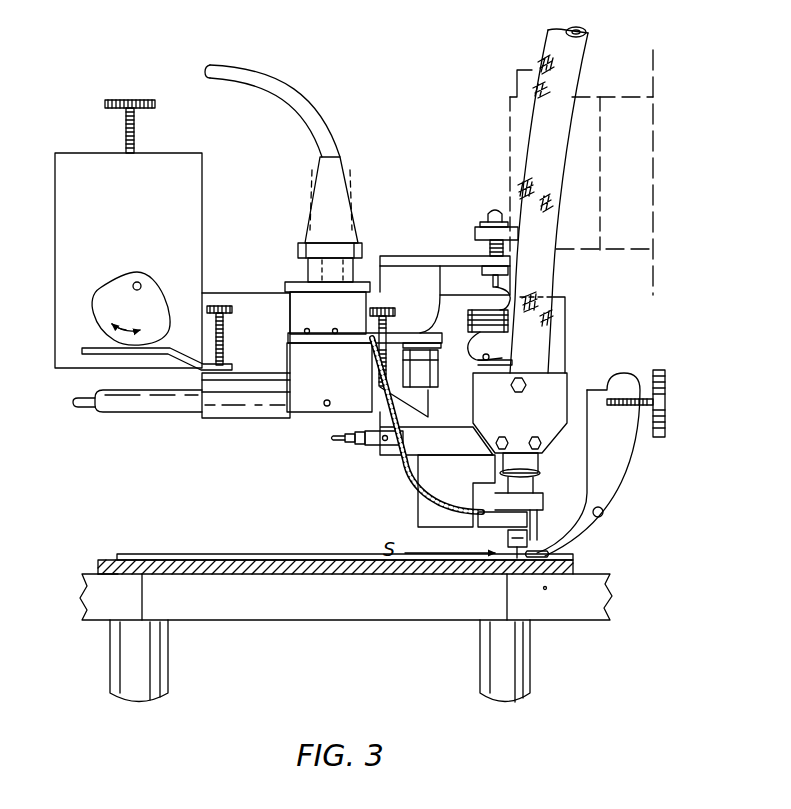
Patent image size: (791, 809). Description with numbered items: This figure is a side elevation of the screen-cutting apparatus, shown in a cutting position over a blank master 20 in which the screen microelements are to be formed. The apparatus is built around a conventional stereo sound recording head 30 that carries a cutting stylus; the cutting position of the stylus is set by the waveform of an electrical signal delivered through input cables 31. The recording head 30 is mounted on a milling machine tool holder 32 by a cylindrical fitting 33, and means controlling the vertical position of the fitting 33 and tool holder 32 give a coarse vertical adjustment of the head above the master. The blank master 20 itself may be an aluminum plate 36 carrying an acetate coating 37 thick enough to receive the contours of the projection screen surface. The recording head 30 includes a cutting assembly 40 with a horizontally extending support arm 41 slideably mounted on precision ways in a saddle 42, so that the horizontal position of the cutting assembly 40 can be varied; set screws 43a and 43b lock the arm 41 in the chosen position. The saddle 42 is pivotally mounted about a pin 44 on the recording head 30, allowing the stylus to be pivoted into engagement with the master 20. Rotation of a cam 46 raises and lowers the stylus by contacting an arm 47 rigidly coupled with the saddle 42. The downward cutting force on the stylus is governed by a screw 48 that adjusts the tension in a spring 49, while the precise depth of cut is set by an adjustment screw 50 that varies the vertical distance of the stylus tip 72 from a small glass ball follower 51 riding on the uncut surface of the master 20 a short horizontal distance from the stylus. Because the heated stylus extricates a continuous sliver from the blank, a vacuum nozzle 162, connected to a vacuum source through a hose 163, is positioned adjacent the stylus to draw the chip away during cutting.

The blank master 20 is at (94, 560).
The stereo sound recording head 30 is at (386, 250).
The input cables 31 is at (245, 77).
The milling machine tool holder 32 is at (638, 150).
The cylindrical fitting 33 is at (515, 81).
The aluminum plate 36 is at (576, 577).
The acetate coating 37 is at (178, 556).
The cutting assembly 40 is at (380, 462).
The support arm 41 is at (143, 412).
The saddle 42 is at (251, 418).
The set screw 43a is at (226, 330).
The set screw 43b is at (392, 310).
The pin 44 is at (325, 405).
The cam 46 is at (121, 289).
The arm 47 is at (90, 349).
The screw 48 is at (478, 234).
The spring 49 is at (469, 311).
The adjustment screw 50 is at (667, 418).
The glass ball follower 51 is at (556, 554).
The stylus tip 72 is at (482, 583).
The vacuum nozzle 162 is at (508, 537).
The hose 163 is at (568, 72).